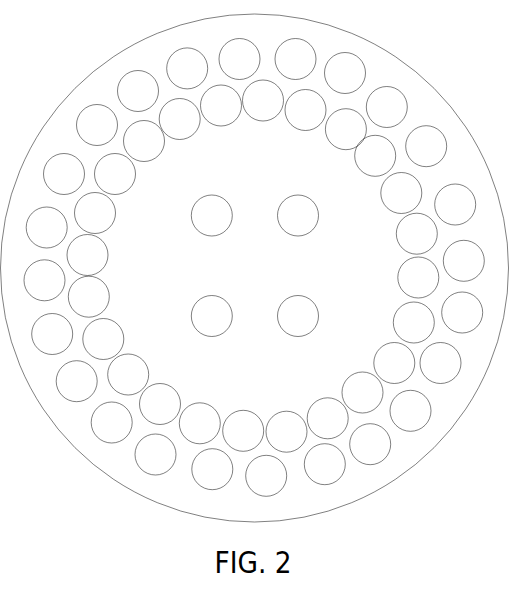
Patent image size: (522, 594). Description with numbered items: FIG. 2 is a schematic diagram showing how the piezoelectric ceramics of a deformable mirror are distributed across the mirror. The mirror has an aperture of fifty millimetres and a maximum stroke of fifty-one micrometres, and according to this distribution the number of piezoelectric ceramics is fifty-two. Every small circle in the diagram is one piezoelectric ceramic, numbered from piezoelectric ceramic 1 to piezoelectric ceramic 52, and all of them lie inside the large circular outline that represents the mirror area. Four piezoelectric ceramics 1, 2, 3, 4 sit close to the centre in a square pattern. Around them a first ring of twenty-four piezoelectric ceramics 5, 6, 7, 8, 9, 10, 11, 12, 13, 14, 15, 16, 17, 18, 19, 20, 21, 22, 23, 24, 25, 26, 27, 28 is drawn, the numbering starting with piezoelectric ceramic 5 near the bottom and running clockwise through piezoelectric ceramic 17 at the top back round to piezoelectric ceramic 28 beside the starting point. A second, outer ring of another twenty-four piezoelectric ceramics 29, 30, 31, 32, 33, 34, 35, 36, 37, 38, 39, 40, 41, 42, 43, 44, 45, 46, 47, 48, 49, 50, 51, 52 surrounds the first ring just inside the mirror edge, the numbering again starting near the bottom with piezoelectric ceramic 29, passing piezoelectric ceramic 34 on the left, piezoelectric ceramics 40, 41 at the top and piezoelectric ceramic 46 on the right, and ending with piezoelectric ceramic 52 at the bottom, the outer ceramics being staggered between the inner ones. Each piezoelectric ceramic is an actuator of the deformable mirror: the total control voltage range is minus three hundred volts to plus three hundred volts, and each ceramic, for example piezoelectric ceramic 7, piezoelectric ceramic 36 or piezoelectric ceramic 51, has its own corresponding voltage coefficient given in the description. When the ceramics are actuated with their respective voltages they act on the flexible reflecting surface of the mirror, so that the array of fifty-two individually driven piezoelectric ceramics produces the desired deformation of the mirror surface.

The piezoelectric ceramic 1 is at (298, 316).
The piezoelectric ceramic 2 is at (298, 215).
The piezoelectric ceramic 3 is at (211, 215).
The piezoelectric ceramic 4 is at (211, 316).
The piezoelectric ceramic 5 is at (243, 430).
The piezoelectric ceramic 6 is at (199, 423).
The piezoelectric ceramic 7 is at (160, 404).
The piezoelectric ceramic 8 is at (128, 374).
The piezoelectric ceramic 9 is at (103, 339).
The piezoelectric ceramic 10 is at (88, 296).
The piezoelectric ceramic 11 is at (87, 255).
The piezoelectric ceramic 12 is at (95, 213).
The piezoelectric ceramic 13 is at (115, 174).
The piezoelectric ceramic 14 is at (144, 141).
The piezoelectric ceramic 15 is at (179, 119).
The piezoelectric ceramic 16 is at (221, 105).
The piezoelectric ceramic 17 is at (263, 100).
The piezoelectric ceramic 18 is at (305, 110).
The piezoelectric ceramic 19 is at (345, 129).
The piezoelectric ceramic 20 is at (375, 155).
The piezoelectric ceramic 21 is at (401, 193).
The piezoelectric ceramic 22 is at (416, 233).
The piezoelectric ceramic 23 is at (418, 277).
The piezoelectric ceramic 24 is at (413, 322).
The piezoelectric ceramic 25 is at (394, 363).
The piezoelectric ceramic 26 is at (362, 392).
The piezoelectric ceramic 27 is at (327, 418).
The piezoelectric ceramic 28 is at (286, 431).
The piezoelectric ceramic 29 is at (212, 469).
The piezoelectric ceramic 30 is at (155, 454).
The piezoelectric ceramic 31 is at (111, 422).
The piezoelectric ceramic 32 is at (76, 381).
The piezoelectric ceramic 33 is at (52, 334).
The piezoelectric ceramic 34 is at (44, 280).
The piezoelectric ceramic 35 is at (46, 227).
The piezoelectric ceramic 36 is at (64, 174).
The piezoelectric ceramic 37 is at (97, 125).
The piezoelectric ceramic 38 is at (138, 91).
The piezoelectric ceramic 39 is at (187, 68).
The piezoelectric ceramic 40 is at (239, 59).
The piezoelectric ceramic 41 is at (295, 59).
The piezoelectric ceramic 42 is at (345, 73).
The piezoelectric ceramic 43 is at (386, 107).
The piezoelectric ceramic 44 is at (426, 146).
The piezoelectric ceramic 45 is at (455, 204).
The piezoelectric ceramic 46 is at (463, 260).
The piezoelectric ceramic 47 is at (462, 312).
The piezoelectric ceramic 48 is at (440, 363).
The piezoelectric ceramic 49 is at (410, 410).
The piezoelectric ceramic 50 is at (370, 444).
The piezoelectric ceramic 51 is at (324, 464).
The piezoelectric ceramic 52 is at (266, 475).